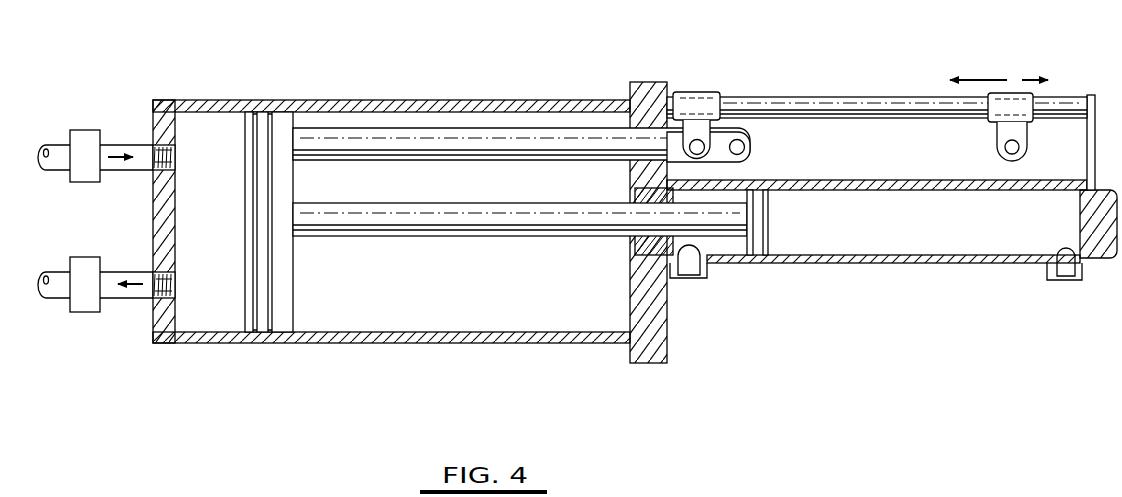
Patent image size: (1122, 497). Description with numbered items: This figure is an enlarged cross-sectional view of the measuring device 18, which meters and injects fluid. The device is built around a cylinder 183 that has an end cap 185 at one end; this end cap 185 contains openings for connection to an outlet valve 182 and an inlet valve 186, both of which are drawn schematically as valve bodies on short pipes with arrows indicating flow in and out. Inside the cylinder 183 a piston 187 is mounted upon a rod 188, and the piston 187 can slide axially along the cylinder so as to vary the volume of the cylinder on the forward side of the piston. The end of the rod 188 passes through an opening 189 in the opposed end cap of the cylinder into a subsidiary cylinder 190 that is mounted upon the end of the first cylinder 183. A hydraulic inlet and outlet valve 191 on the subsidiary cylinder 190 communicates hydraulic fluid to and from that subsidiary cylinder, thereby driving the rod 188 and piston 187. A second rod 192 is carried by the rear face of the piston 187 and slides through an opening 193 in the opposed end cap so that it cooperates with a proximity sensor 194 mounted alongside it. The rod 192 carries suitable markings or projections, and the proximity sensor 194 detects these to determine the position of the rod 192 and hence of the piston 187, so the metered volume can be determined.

The measuring device 18 is at (557, 57).
The outlet valve 182 is at (85, 305).
The cylinder 183 is at (460, 100).
The end cap 185 is at (152, 213).
The inlet valve 186 is at (83, 143).
The piston 187 is at (263, 217).
The rod 188 is at (417, 213).
The opening 189 is at (660, 207).
The subsidiary cylinder 190 is at (852, 267).
The hydraulic inlet and outlet valve 191 is at (1065, 272).
The rod 192 is at (538, 140).
The opening 193 is at (648, 130).
The proximity sensor 194 is at (858, 82).